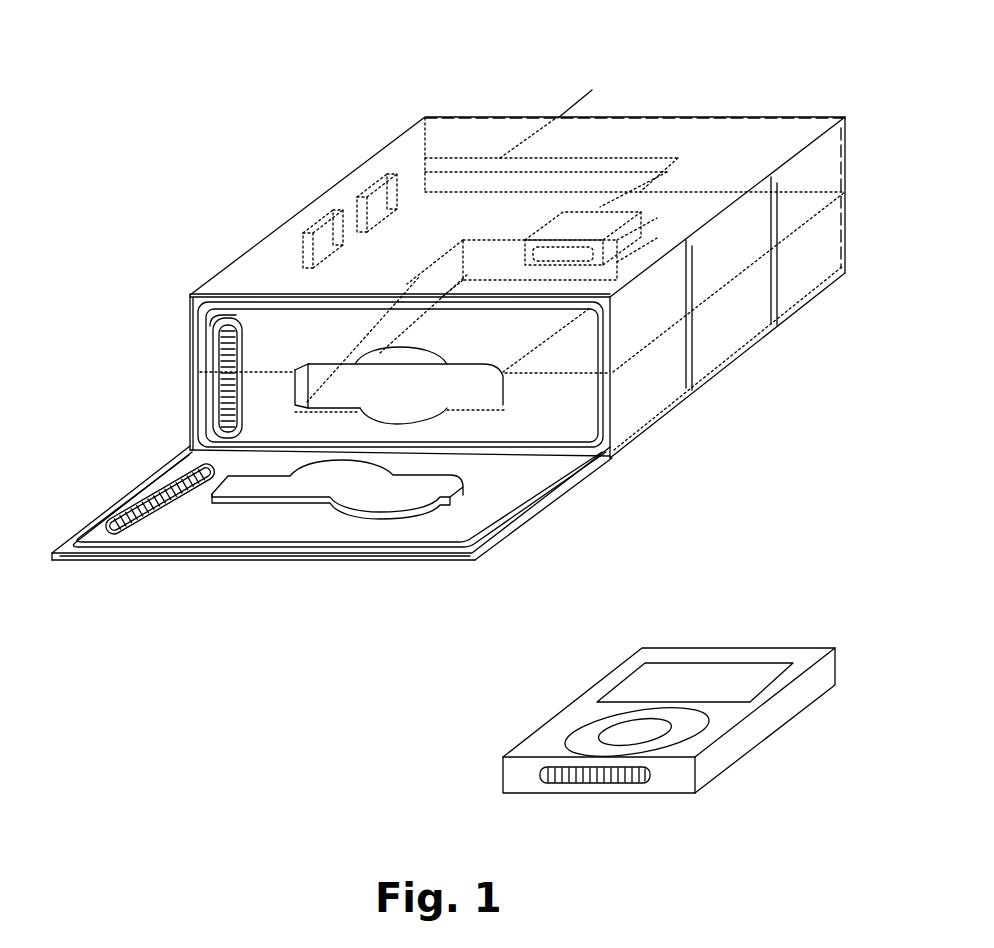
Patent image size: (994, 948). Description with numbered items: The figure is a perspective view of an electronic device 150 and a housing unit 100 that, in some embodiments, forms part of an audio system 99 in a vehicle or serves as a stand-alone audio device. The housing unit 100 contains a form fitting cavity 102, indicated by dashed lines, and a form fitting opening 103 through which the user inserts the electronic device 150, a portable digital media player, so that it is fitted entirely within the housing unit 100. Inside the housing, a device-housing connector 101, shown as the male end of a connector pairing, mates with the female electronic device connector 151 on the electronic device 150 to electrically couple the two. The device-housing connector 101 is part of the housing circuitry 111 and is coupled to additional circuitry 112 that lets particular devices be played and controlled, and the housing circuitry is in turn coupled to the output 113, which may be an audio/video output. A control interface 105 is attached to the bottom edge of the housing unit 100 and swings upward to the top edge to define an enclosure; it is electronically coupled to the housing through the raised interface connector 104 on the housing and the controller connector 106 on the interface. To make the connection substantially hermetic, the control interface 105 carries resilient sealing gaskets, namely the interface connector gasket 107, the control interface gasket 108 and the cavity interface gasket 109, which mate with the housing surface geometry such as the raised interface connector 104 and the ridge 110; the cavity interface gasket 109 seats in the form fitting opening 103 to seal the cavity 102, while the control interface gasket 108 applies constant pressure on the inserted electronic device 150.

The audio system 99 is at (230, 72).
The housing unit 100 is at (533, 314).
The device-housing connector 101 is at (645, 215).
The form fitting cavity 102 is at (463, 386).
The form fitting opening 103 is at (337, 363).
The interface connector 104 is at (217, 383).
The control interface 105 is at (311, 481).
The controller connector 106 is at (102, 538).
The interface connector gasket 107 is at (162, 513).
The control interface gasket 108 is at (350, 553).
The cavity interface gasket 109 is at (412, 502).
The ridge 110 is at (200, 338).
The circuitry 111 is at (320, 246).
The additional circuitry 112 is at (373, 208).
The output 113 is at (578, 100).
The electronic device 150 is at (835, 632).
The electronic device connector 151 is at (572, 240).